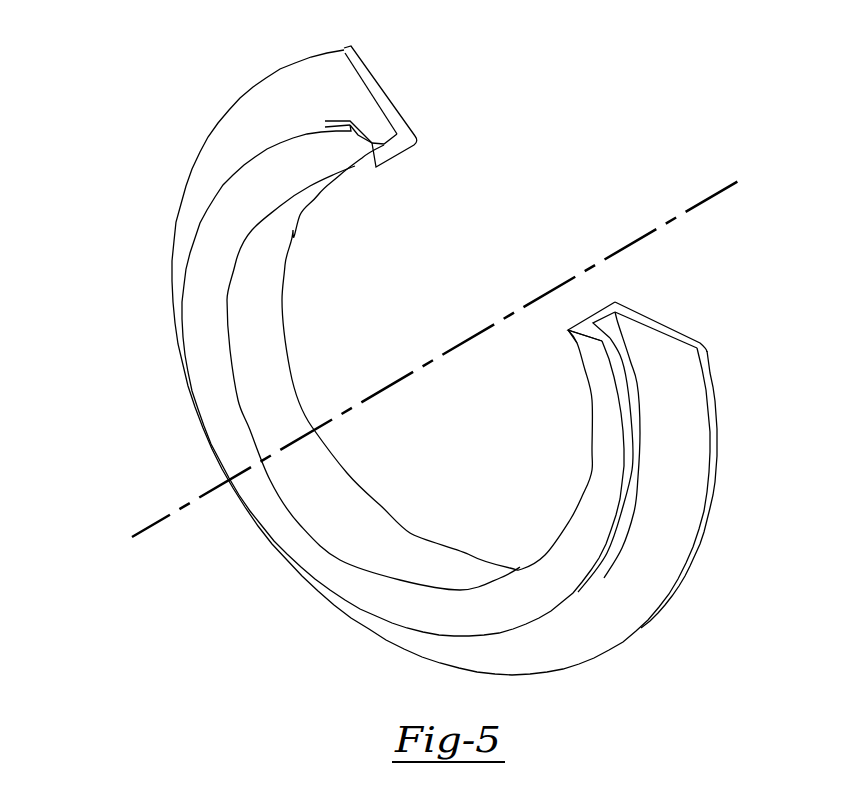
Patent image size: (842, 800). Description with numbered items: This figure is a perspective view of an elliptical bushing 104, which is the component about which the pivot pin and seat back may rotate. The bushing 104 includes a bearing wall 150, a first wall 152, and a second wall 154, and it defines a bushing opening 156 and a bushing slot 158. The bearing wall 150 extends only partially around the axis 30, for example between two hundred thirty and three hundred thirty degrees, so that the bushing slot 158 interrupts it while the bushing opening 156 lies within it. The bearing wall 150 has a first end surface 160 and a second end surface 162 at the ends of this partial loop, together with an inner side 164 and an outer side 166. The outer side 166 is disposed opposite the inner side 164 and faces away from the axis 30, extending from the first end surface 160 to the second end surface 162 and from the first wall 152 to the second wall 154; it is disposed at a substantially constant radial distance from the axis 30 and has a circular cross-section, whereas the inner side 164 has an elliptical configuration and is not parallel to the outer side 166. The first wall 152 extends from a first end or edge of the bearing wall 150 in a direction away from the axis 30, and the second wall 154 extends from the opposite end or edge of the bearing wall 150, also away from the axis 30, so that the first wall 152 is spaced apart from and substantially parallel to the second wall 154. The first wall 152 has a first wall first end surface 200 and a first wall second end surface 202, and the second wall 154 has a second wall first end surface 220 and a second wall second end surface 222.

The axis 30 is at (712, 196).
The bushing 104 is at (172, 447).
The bearing wall 150 is at (342, 513).
The first wall 152 is at (208, 200).
The second wall 154 is at (262, 86).
The bushing opening 156 is at (378, 356).
The bushing slot 158 is at (518, 183).
The first end surface 160 is at (393, 147).
The second end surface 162 is at (598, 304).
The inner side 164 is at (392, 156).
The outer side 166 is at (386, 138).
The first wall first end surface 200 is at (362, 140).
The first wall second end surface 202 is at (585, 344).
The second wall first end surface 220 is at (377, 83).
The second wall second end surface 222 is at (668, 326).